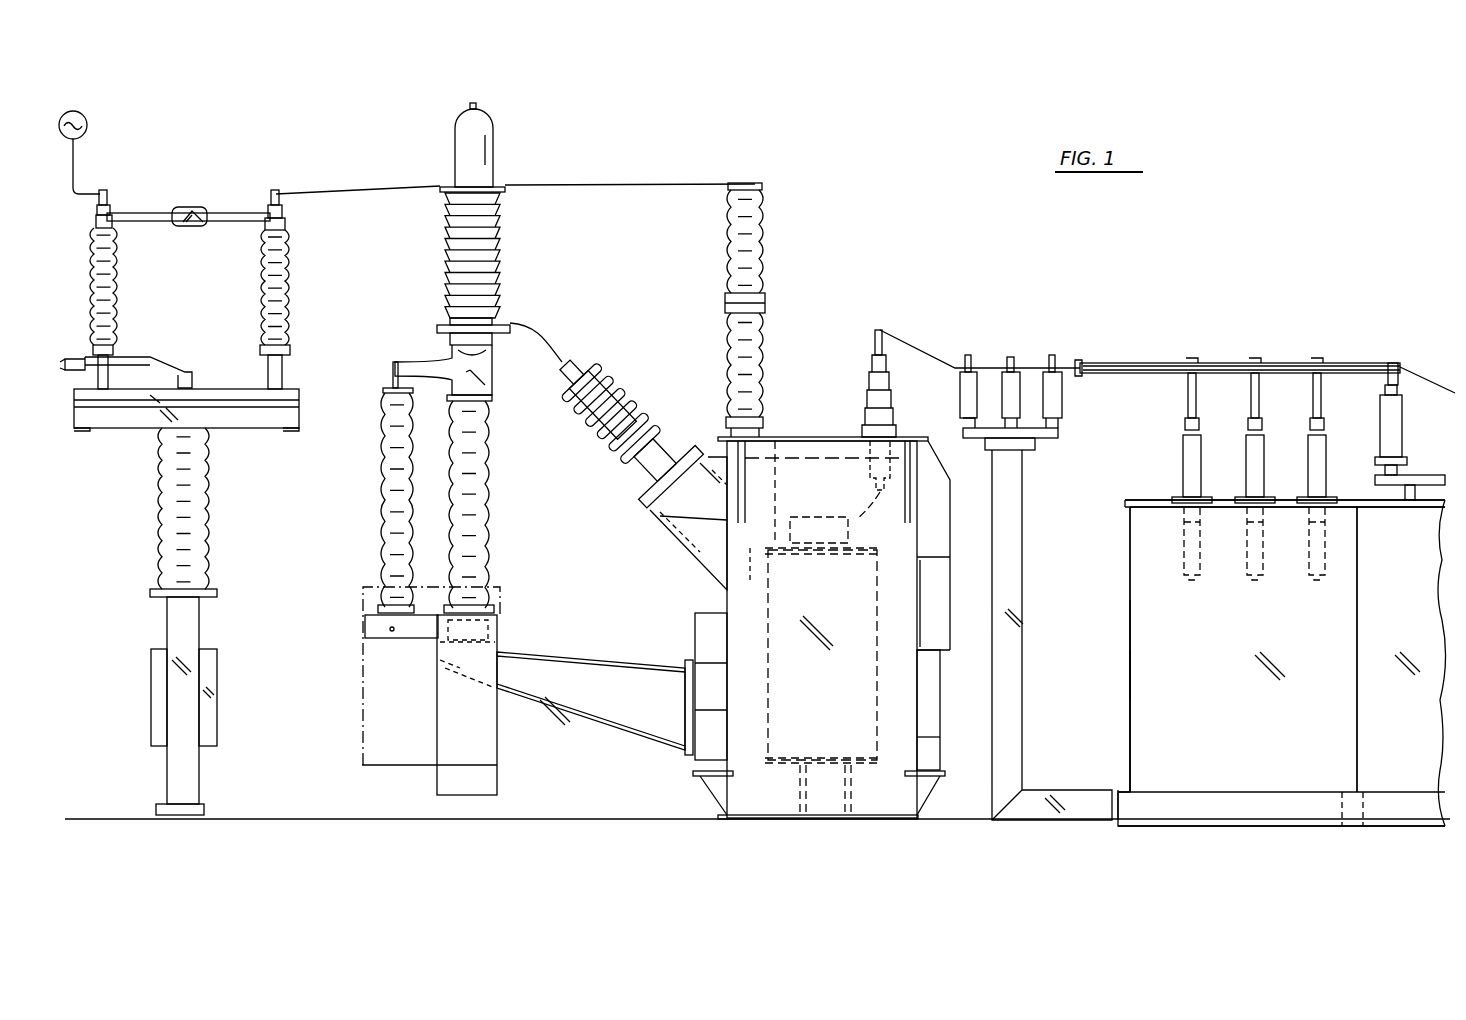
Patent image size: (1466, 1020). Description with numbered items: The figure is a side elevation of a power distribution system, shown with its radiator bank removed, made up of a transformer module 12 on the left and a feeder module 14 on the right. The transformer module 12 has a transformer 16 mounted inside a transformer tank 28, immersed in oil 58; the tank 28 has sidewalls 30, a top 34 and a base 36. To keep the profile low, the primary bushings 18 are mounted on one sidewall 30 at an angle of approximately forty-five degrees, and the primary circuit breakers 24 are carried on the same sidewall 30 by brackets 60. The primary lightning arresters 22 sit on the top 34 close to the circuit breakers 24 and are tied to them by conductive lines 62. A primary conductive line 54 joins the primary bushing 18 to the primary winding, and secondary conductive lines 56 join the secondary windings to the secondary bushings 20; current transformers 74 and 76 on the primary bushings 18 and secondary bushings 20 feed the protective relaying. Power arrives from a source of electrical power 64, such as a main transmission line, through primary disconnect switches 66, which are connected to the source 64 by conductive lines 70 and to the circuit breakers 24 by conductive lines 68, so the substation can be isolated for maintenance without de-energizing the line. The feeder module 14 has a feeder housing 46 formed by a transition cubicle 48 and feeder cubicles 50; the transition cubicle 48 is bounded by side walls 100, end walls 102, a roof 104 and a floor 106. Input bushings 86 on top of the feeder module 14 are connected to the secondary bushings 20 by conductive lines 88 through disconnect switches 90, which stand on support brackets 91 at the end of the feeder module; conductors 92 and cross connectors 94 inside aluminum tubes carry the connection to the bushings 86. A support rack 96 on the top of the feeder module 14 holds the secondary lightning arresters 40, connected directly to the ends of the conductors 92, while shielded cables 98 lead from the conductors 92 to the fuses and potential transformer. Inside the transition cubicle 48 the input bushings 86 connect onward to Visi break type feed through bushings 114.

The transformer module 12 is at (781, 428).
The feeder module 14 is at (1165, 498).
The transformer 16 is at (821, 628).
The primary bushings 18 is at (618, 400).
The secondary bushings 20 is at (896, 390).
The primary lightning arresters 22 is at (762, 200).
The primary circuit breakers 24 is at (493, 125).
The transformer tank 28 is at (830, 441).
The sidewalls 30 is at (722, 593).
The top 34 is at (915, 441).
The base 36 is at (797, 822).
The secondary lightning arresters 40 is at (1402, 412).
The feeder housing 46 is at (1128, 533).
The transition cubicle 48 is at (1262, 626).
The feeder cubicle 50 is at (1411, 610).
The primary conductive line 54 is at (752, 573).
The secondary conductive lines 56 is at (870, 522).
The oil 58 is at (790, 447).
The brackets 60 is at (593, 662).
The conductive lines 62 is at (575, 184).
The source of electrical power 64 is at (88, 123).
The primary disconnect switches 66 is at (203, 207).
The conductive lines 68 is at (373, 170).
The conductive lines 70 is at (101, 193).
The current transformers 74 is at (666, 555).
The current transformers 76 is at (866, 487).
The input bushings 86 is at (1246, 448).
The conductive lines 88 is at (928, 368).
The disconnect switches 90 is at (1025, 364).
The support brackets 91 is at (1022, 752).
The conductors 92 is at (1138, 363).
The cross connectors 94 is at (1188, 395).
The support rack 96 is at (1420, 475).
The shielded cables 98 is at (1440, 354).
The side walls 100 is at (1135, 682).
The end walls 102 is at (1130, 637).
The roof 104 is at (1130, 500).
The floor 106 is at (1172, 792).
The feed through bushings 114 is at (1310, 575).